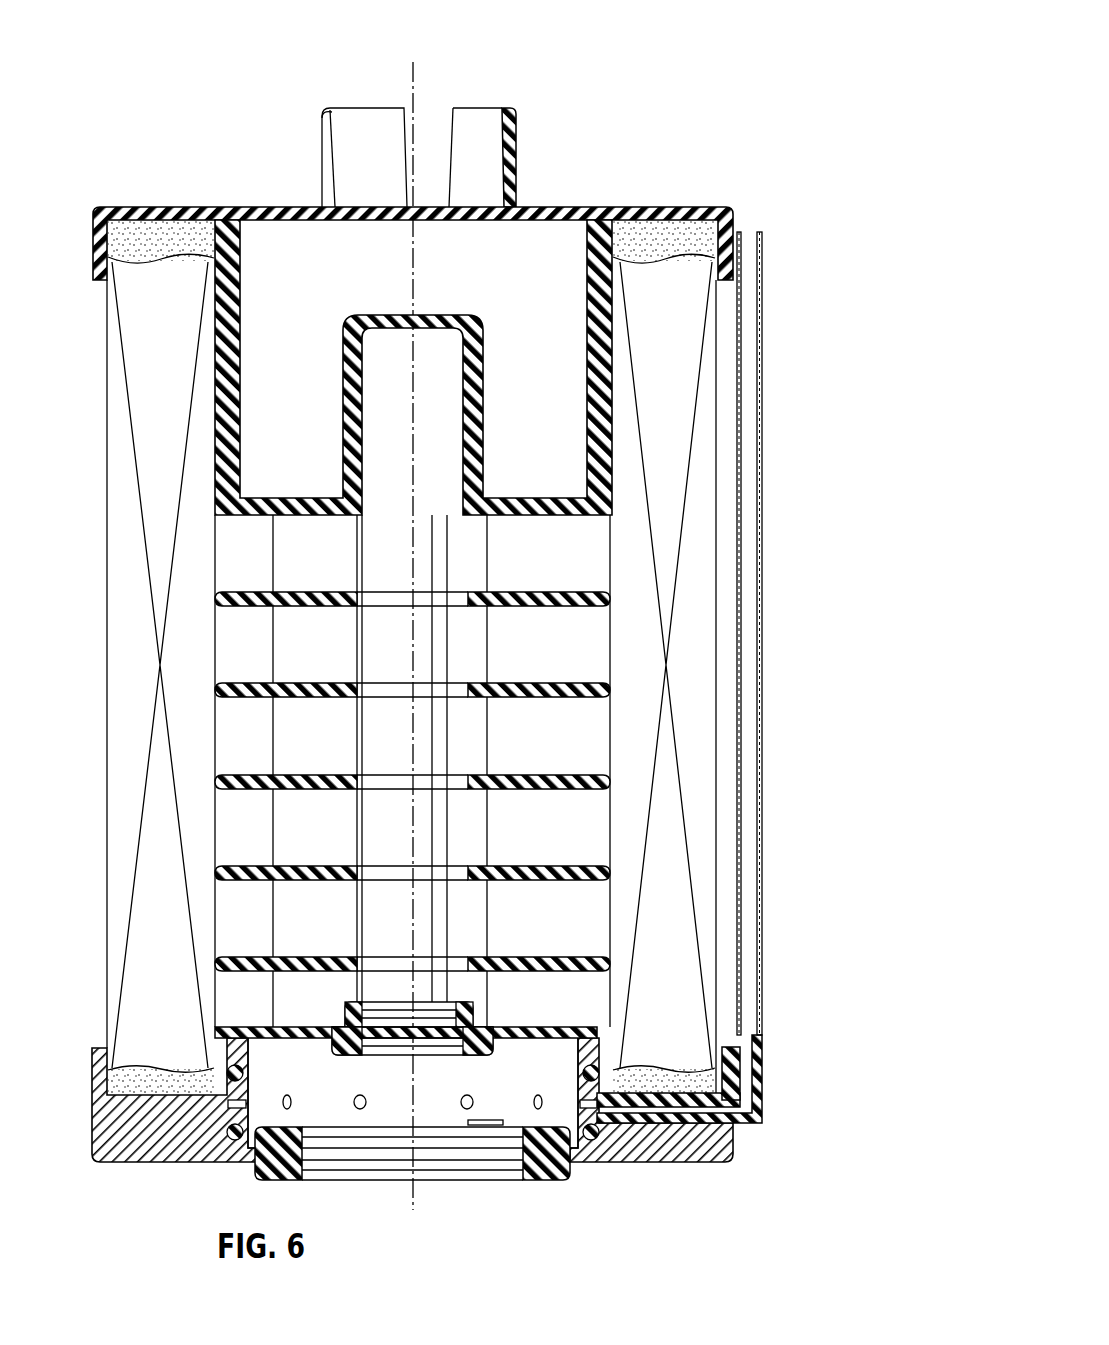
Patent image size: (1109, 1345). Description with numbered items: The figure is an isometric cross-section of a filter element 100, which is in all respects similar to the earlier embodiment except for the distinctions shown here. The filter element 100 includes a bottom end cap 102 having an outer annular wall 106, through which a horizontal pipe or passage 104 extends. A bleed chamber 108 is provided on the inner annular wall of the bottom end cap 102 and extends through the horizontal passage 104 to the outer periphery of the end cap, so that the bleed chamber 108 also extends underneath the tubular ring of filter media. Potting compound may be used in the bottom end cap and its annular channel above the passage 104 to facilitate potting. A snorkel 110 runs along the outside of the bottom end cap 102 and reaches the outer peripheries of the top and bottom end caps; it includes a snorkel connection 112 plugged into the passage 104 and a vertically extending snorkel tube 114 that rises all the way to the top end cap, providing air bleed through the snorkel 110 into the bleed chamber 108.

The filter element 100 is at (798, 65).
The bottom end cap 102 is at (150, 1160).
The horizontal pipe or passage 104 is at (667, 1110).
The outer annular wall 106 is at (723, 1082).
The bleed chamber 108 is at (520, 1107).
The snorkel 110 is at (797, 495).
The snorkel connection 112 is at (762, 1113).
The snorkel tube 114 is at (762, 597).